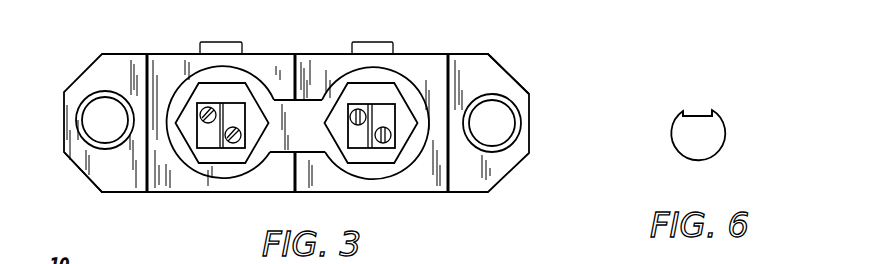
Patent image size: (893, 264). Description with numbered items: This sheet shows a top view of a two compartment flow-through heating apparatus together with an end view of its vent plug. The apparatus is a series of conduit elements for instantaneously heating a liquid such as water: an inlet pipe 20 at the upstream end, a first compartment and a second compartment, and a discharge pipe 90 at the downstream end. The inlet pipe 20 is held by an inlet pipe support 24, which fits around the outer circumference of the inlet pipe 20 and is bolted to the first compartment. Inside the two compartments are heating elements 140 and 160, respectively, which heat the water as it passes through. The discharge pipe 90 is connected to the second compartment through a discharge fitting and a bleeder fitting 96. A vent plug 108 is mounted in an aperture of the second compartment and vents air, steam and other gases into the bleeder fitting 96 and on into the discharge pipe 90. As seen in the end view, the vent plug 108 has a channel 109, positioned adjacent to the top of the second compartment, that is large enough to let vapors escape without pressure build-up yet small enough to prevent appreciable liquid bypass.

In FIG. 3, the inlet pipe 20 is at (516, 111).
In FIG. 3, the inlet pipe support 24 is at (492, 80).
In FIG. 3, the discharge pipe 90 is at (88, 96).
In FIG. 3, the bleeder fitting 96 is at (105, 173).
In FIG. 3, the heating element 140 is at (385, 112).
In FIG. 3, the heating element 160 is at (233, 110).
In FIG. 6, the vent plug 108 is at (708, 127).
In FIG. 6, the channel 109 is at (692, 109).